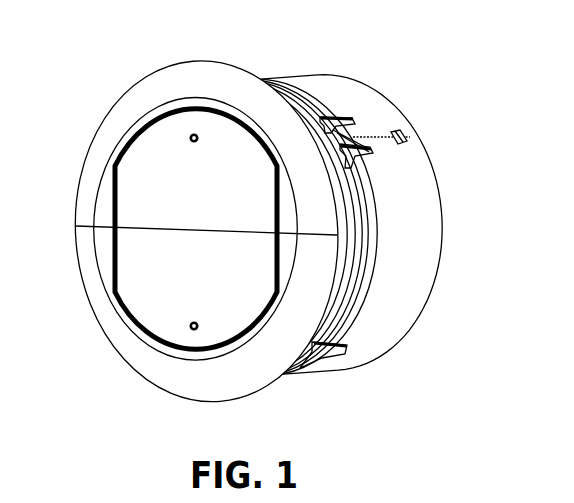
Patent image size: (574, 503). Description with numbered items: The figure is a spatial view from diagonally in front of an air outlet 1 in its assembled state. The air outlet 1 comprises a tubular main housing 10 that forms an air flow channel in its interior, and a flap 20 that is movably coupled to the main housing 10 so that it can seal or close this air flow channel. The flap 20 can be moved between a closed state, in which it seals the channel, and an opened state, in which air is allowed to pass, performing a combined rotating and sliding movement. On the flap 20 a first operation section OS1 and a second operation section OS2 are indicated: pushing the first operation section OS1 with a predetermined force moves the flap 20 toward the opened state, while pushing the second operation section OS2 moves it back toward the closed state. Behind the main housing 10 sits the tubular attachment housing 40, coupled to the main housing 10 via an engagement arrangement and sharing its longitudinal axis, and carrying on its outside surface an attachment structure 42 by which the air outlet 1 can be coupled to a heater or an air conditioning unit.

The air outlet 1 is at (263, 215).
The main housing 10 is at (97, 170).
The flap 20 is at (132, 292).
The first operation section OS1 is at (191, 134).
The second operation section OS2 is at (191, 328).
The attachment housing 40 is at (405, 313).
The attachment structure 42 is at (368, 198).